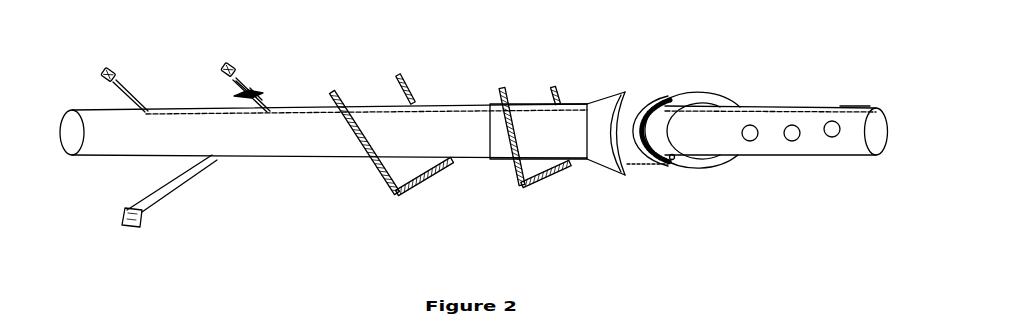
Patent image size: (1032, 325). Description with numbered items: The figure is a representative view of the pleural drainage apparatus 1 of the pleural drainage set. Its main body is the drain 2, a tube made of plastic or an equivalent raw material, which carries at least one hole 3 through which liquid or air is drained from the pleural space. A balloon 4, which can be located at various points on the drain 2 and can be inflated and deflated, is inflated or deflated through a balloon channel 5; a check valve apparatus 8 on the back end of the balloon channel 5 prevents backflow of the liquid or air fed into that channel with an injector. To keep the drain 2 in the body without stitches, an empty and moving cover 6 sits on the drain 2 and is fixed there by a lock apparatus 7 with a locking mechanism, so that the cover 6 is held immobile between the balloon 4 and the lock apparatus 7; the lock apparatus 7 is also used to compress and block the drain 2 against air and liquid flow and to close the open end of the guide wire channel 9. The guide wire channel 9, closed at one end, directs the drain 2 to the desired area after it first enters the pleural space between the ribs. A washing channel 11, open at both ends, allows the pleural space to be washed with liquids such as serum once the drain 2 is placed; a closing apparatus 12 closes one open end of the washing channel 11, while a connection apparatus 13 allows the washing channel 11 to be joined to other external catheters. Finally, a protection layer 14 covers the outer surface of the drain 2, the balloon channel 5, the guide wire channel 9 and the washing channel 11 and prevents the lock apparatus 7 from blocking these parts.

The pleural drainage apparatus 1 is at (485, 58).
The drain 2 is at (305, 140).
The hole 3 is at (832, 121).
The balloon 4 is at (717, 168).
The balloon channel 5 is at (188, 176).
The cover 6 is at (567, 148).
The lock apparatus 7 is at (263, 95).
The check valve apparatus 8 is at (137, 222).
The guide wire channel 9 is at (128, 93).
The washing channel 11 is at (250, 88).
The closing apparatus 12 is at (103, 76).
The connection apparatus 13 is at (232, 83).
The protection layer 14 is at (655, 108).